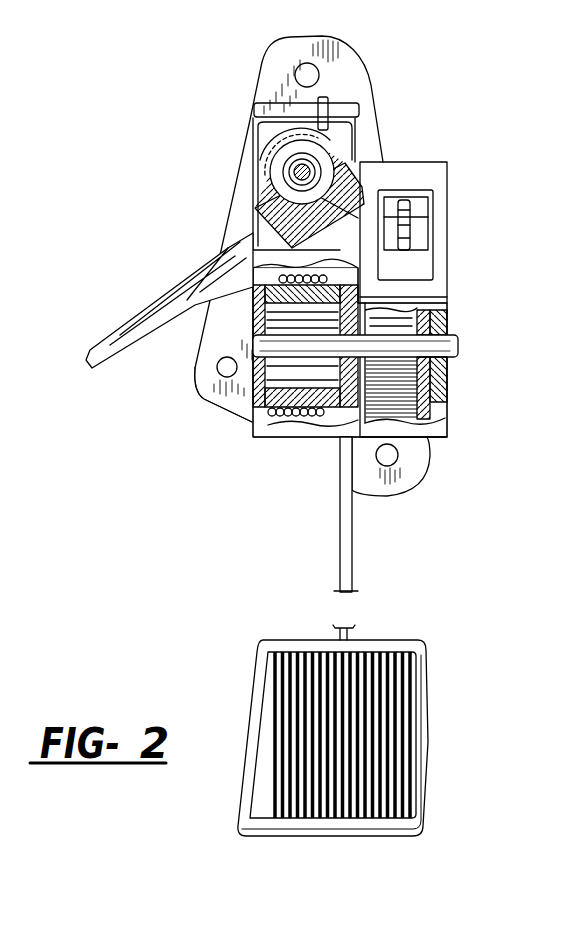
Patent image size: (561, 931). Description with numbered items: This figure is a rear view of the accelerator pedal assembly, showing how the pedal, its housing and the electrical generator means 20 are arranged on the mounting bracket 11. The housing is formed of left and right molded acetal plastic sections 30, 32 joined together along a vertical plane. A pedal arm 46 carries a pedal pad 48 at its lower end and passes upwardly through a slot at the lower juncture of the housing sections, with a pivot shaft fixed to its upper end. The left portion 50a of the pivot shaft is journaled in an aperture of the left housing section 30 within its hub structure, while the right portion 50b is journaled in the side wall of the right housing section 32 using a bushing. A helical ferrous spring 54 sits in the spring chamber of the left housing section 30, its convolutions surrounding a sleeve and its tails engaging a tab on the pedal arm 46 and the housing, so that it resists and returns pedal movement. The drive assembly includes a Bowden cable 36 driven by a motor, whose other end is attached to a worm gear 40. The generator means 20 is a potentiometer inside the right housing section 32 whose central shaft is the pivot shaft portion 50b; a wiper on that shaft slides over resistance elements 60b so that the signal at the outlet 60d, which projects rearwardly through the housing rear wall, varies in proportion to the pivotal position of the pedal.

The mounting bracket 11 is at (378, 86).
The generator means 20 is at (470, 276).
The left housing section 30 is at (253, 405).
The right housing section 32 is at (450, 226).
The cable 36 is at (122, 336).
The worm gear 40 is at (366, 200).
The pedal arm 46 is at (335, 632).
The pedal pad 48 is at (275, 680).
The left portion of pivot shaft 50a is at (198, 378).
The right portion of pivot shaft 50b is at (462, 344).
The spring 54 is at (294, 415).
The resistance elements 60b is at (440, 400).
The outlet 60d is at (436, 200).